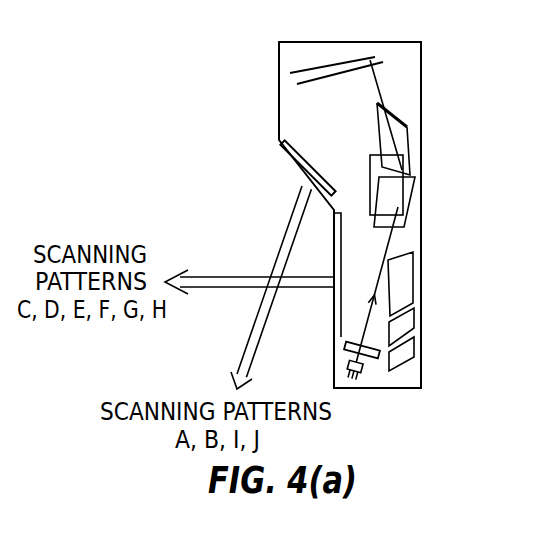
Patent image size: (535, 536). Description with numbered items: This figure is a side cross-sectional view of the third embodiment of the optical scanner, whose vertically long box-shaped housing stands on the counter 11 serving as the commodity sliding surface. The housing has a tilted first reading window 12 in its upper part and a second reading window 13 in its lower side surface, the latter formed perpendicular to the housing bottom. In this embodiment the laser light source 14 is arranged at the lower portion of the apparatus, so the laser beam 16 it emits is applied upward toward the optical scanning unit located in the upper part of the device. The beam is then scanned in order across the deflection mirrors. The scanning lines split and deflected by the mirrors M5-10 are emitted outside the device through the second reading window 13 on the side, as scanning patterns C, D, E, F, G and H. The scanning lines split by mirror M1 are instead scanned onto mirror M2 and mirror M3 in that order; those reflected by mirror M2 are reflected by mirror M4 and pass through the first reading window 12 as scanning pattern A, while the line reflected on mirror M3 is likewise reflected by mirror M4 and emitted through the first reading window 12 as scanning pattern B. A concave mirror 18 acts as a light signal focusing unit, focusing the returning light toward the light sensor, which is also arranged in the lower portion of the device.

The mirror M4 is at (348, 62).
The mirror M3 is at (381, 87).
The mirror M2 is at (409, 129).
The mirror M1 is at (440, 191).
The counter 11 is at (421, 209).
The mirrors M5 through M10 M5-10 is at (428, 247).
The first reading window 12 is at (289, 157).
The second reading window 13 is at (340, 336).
The laser light source 14 is at (362, 373).
The laser beam 16 is at (376, 272).
The concave mirror 18 is at (378, 356).